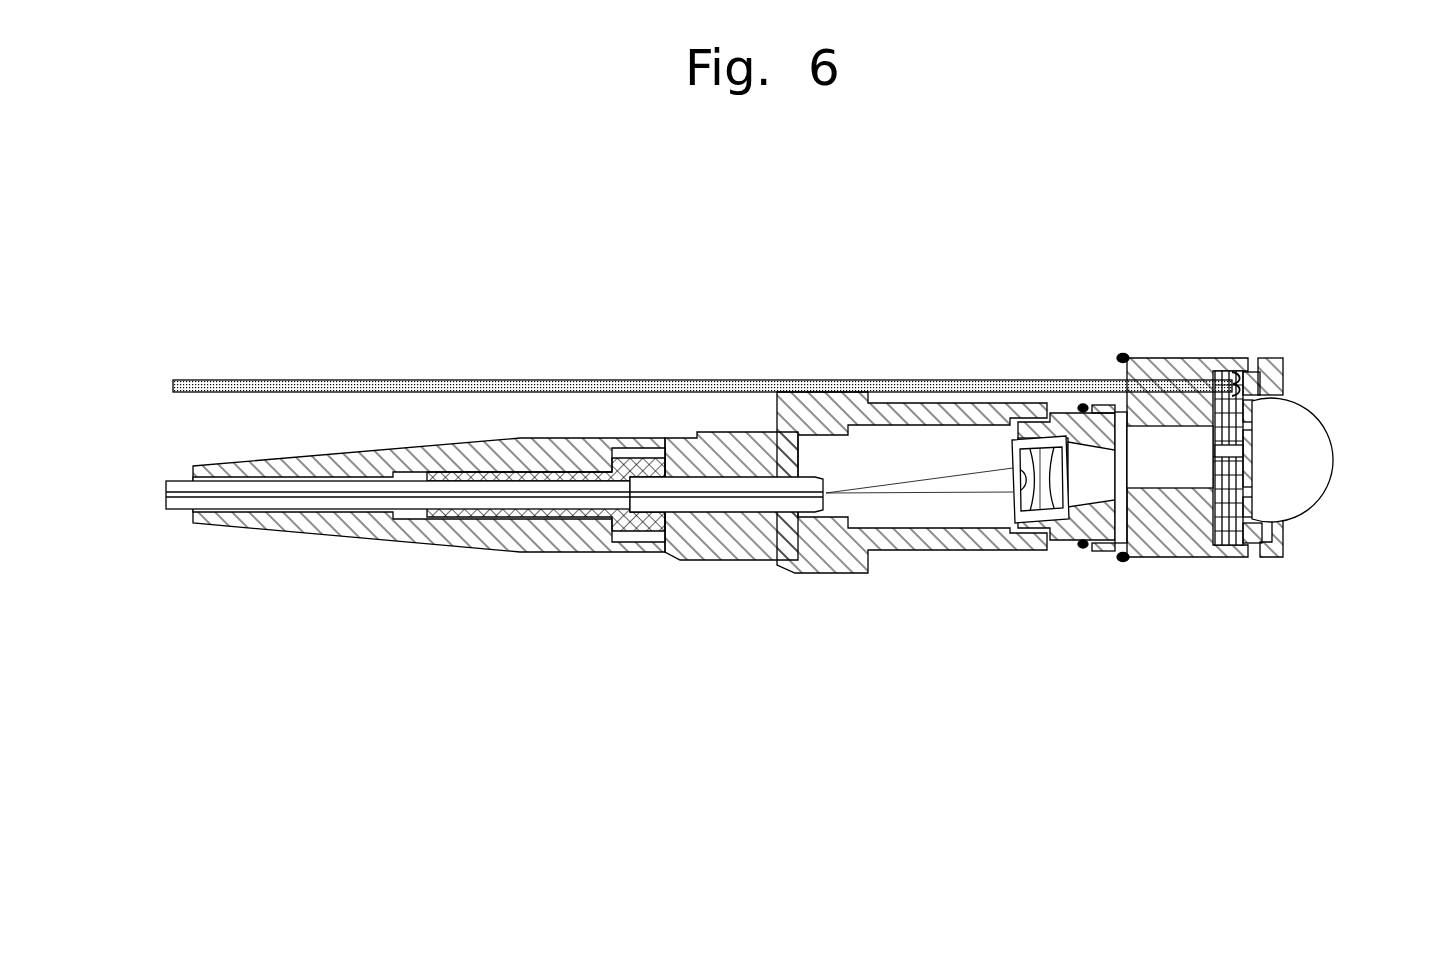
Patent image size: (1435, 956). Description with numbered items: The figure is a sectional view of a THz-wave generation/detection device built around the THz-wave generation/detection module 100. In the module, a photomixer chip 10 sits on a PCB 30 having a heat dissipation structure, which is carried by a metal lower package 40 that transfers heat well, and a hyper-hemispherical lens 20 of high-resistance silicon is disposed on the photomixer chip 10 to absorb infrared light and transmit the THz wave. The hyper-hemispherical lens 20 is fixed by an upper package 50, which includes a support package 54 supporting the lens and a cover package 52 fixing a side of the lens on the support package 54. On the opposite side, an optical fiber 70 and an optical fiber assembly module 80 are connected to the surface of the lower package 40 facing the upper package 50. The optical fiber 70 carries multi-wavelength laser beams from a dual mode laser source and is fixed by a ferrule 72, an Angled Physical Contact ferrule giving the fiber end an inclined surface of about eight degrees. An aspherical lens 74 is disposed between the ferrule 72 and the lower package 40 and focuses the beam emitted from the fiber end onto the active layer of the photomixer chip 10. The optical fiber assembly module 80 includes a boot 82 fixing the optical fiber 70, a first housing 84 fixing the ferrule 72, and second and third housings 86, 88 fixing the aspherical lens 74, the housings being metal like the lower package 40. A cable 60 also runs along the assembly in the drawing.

The photomixer chip 10 is at (1254, 443).
The hyper-hemispherical lens 20 is at (1313, 477).
The PCB 30 is at (1282, 527).
The lower package 40 is at (1180, 552).
The upper package 50 is at (1167, 640).
The cover package 52 is at (1272, 558).
The support package 54 is at (1250, 547).
The cable 60 is at (580, 386).
The optical fiber 70 is at (462, 493).
The ferrule 72 is at (738, 485).
The aspherical lens 74 is at (1033, 460).
The optical fiber assembly module 80 is at (562, 640).
The boot 82 is at (578, 548).
The first housing 84 is at (735, 548).
The second housing 86 is at (830, 565).
The third housing 88 is at (1058, 540).
The THz-wave generation/detection module 100 is at (1204, 326).